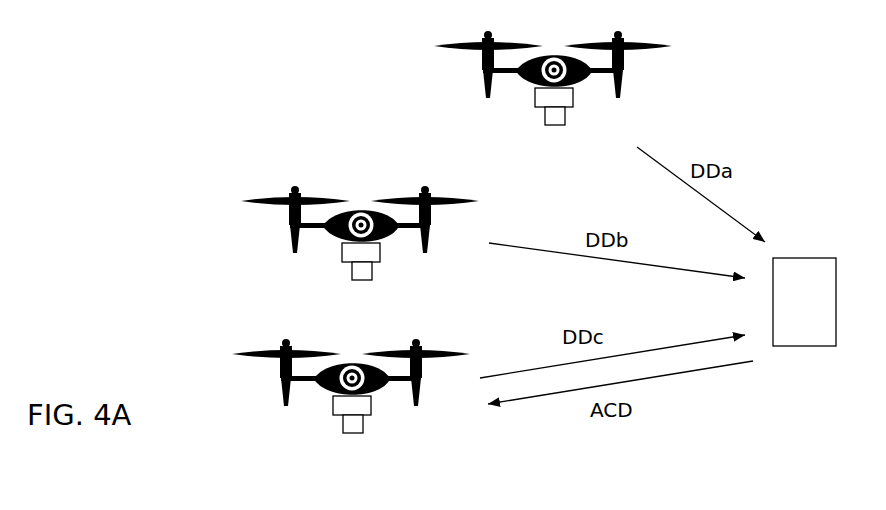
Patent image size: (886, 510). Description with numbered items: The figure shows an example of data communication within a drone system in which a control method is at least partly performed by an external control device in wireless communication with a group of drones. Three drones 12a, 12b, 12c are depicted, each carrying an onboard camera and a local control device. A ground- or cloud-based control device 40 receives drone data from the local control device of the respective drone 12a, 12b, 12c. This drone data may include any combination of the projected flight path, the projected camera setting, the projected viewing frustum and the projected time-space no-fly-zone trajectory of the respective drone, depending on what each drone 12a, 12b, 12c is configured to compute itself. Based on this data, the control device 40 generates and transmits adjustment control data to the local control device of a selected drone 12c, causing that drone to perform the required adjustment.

The drone 12a is at (548, 52).
The drone 12b is at (360, 207).
The drone 12c is at (351, 360).
The control device 40 is at (791, 296).